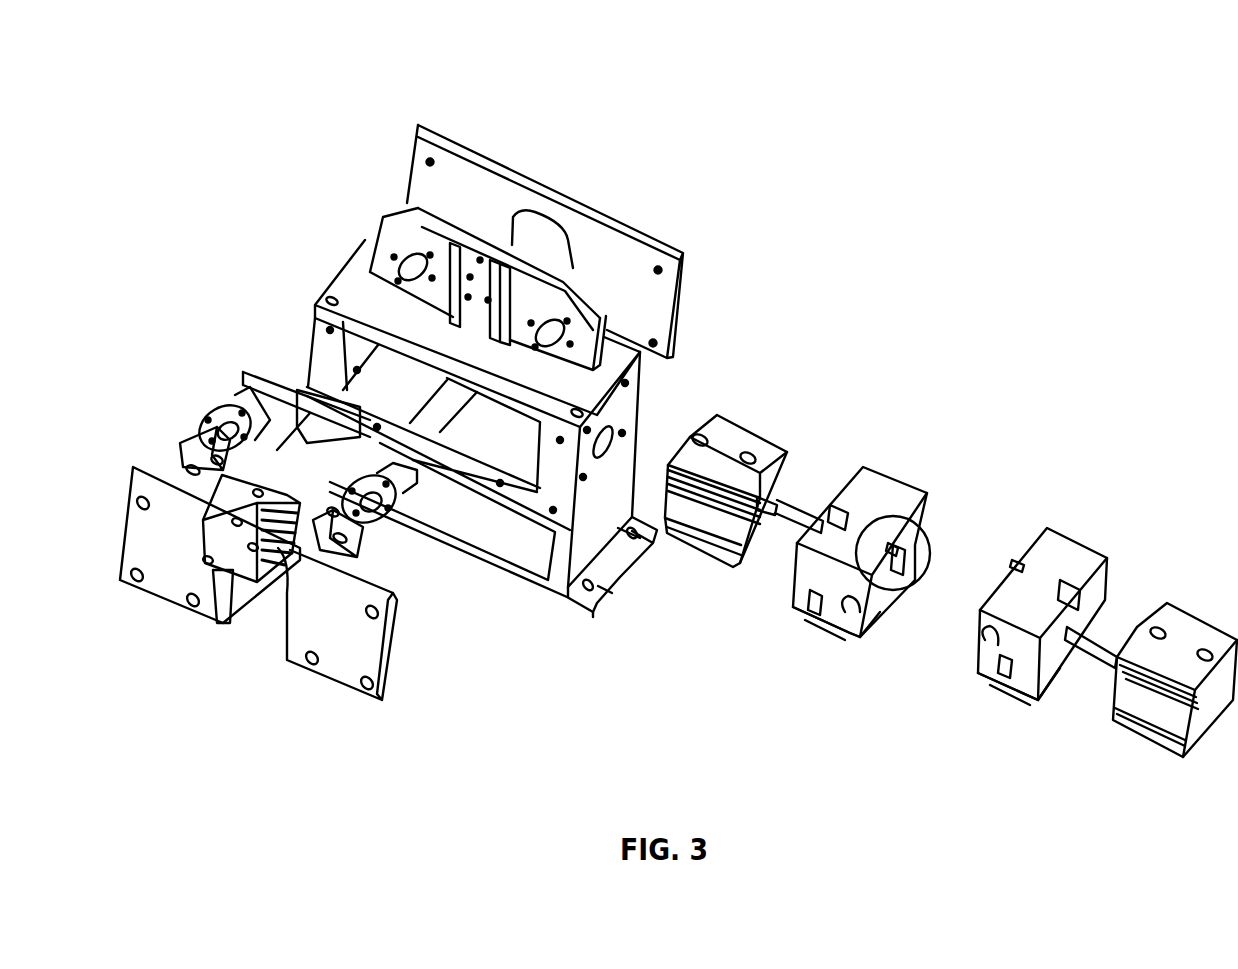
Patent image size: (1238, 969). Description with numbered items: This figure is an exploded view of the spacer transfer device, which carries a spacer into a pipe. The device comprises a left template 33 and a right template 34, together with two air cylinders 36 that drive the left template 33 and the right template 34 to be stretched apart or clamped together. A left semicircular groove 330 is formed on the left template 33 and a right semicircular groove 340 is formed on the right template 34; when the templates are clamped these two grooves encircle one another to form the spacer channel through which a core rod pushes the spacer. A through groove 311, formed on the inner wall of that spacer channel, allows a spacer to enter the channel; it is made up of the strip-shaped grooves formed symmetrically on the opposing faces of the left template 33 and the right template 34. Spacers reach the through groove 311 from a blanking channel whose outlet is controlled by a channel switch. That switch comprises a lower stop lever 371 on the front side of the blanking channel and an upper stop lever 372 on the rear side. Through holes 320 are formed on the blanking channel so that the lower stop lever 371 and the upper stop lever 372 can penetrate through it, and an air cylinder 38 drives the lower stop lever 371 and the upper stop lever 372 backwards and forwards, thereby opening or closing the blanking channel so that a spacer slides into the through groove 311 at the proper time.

The through holes 320 is at (410, 215).
The upper stop lever 372 is at (293, 410).
The lower stop lever 371 is at (205, 410).
The air cylinder 38 is at (243, 557).
The air cylinders 36 is at (728, 452).
The left template 33 is at (872, 497).
The left semicircular groove 330 is at (852, 622).
The through groove 311 is at (1016, 565).
The right template 34 is at (1070, 563).
The right semicircular groove 340 is at (977, 670).